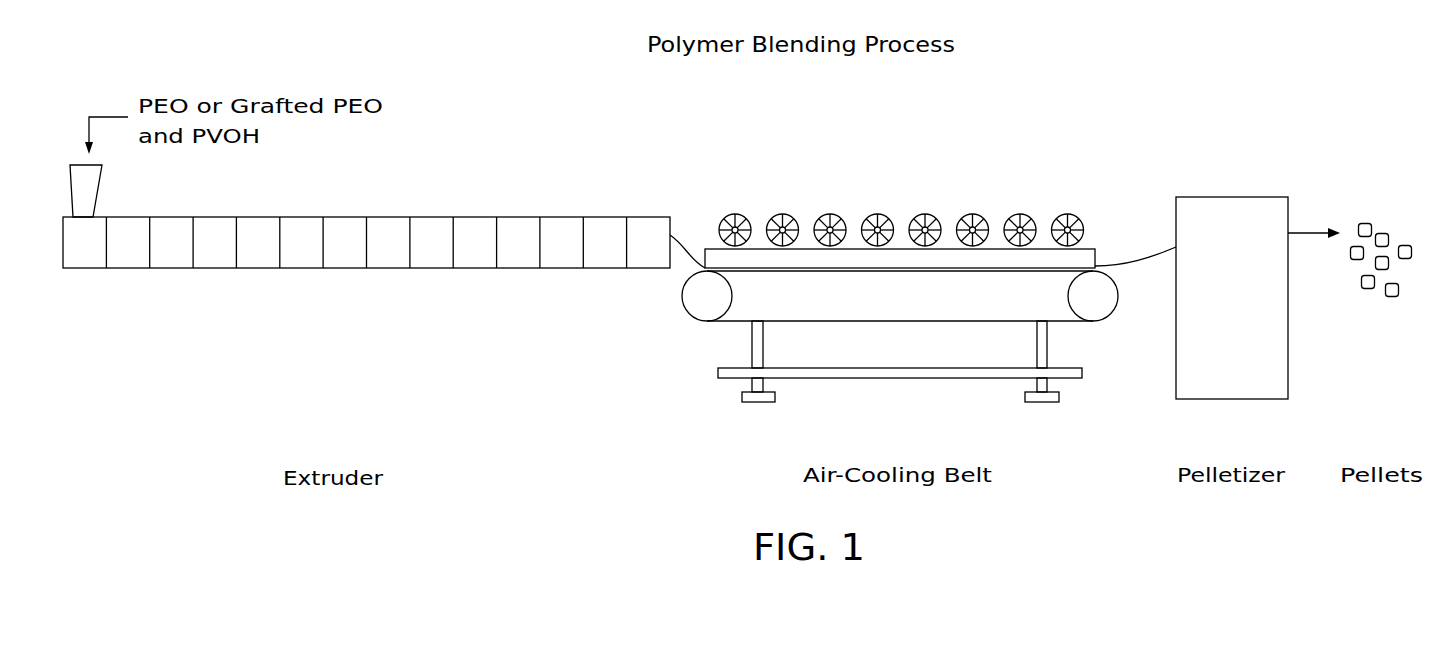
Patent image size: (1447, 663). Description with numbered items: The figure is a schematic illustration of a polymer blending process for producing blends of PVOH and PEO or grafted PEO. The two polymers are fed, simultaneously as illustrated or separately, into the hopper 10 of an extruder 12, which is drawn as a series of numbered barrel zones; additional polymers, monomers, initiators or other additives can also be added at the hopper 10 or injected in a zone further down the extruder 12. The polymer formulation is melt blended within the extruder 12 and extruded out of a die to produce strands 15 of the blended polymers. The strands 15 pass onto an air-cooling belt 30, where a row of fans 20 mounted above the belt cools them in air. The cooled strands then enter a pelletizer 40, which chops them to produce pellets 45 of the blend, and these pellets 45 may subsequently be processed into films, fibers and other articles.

The hopper 10 is at (100, 187).
The extruder 12 is at (346, 291).
The strands 15 is at (705, 268).
The fans 20 is at (1065, 212).
The air-cooling belt 30 is at (714, 336).
The pelletizer 40 is at (1225, 183).
The pellets 45 is at (1367, 194).